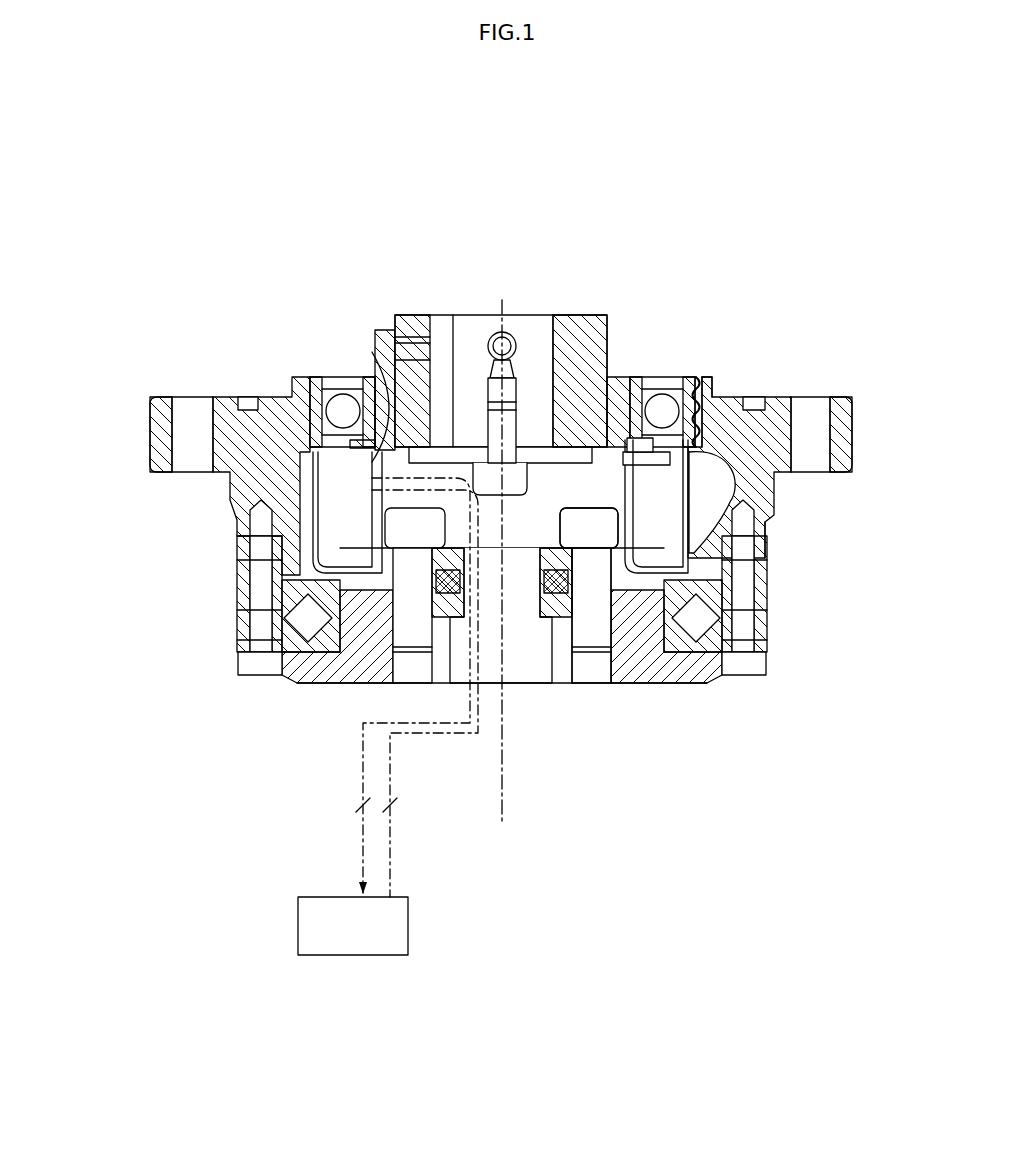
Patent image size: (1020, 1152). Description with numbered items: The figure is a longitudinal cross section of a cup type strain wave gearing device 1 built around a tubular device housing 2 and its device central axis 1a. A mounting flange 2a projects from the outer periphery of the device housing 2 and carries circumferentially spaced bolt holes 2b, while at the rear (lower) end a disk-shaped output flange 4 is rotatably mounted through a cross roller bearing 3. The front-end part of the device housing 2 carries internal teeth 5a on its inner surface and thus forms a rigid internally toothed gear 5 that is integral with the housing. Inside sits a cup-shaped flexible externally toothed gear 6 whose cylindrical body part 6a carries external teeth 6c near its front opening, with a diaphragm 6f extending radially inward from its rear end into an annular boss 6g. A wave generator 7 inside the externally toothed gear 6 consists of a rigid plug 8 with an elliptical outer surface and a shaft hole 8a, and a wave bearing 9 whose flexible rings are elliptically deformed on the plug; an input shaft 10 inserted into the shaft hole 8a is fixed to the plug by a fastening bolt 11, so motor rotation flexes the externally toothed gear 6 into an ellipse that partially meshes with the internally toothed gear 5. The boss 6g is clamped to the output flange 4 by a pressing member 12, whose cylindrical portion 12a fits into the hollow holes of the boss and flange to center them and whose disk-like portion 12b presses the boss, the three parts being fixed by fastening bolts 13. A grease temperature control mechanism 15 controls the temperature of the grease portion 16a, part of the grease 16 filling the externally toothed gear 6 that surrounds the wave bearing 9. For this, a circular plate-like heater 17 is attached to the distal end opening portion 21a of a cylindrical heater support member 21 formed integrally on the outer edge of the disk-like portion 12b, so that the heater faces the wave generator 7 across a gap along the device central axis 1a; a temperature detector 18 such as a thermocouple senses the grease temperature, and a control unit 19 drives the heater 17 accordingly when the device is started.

The strain wave gearing device 1 is at (782, 262).
The device central axis 1a is at (505, 823).
The device housing 2 is at (188, 450).
The mounting flange 2a is at (180, 396).
The bolt holes 2b is at (190, 430).
The cross roller bearing 3 is at (278, 628).
The output flange 4 is at (350, 674).
The internally toothed gear 5 is at (712, 405).
The internal teeth 5a is at (690, 377).
The externally toothed gear 6 is at (703, 474).
The cylindrical body part 6a is at (647, 553).
The external teeth 6c is at (700, 422).
The diaphragm 6f is at (642, 522).
The boss 6g is at (625, 548).
The wave generator 7 is at (617, 340).
The plug 8 is at (580, 330).
The shaft hole 8a is at (534, 330).
The wave bearing 9 is at (658, 376).
The input shaft 10 is at (462, 332).
The fastening bolt 11 is at (483, 335).
The pressing member 12 is at (725, 605).
The cylindrical portion 12a is at (558, 565).
The disk-like portion 12b is at (594, 634).
The fastening bolts 13 is at (603, 560).
The grease temperature control mechanism 15 is at (290, 812).
The grease 16 is at (357, 529).
The grease portion 16a is at (347, 449).
The heater 17 is at (322, 443).
The temperature detector 18 is at (384, 385).
The control unit 19 is at (296, 935).
The heater support member 21 is at (744, 518).
The distal end opening portion 21a is at (722, 509).